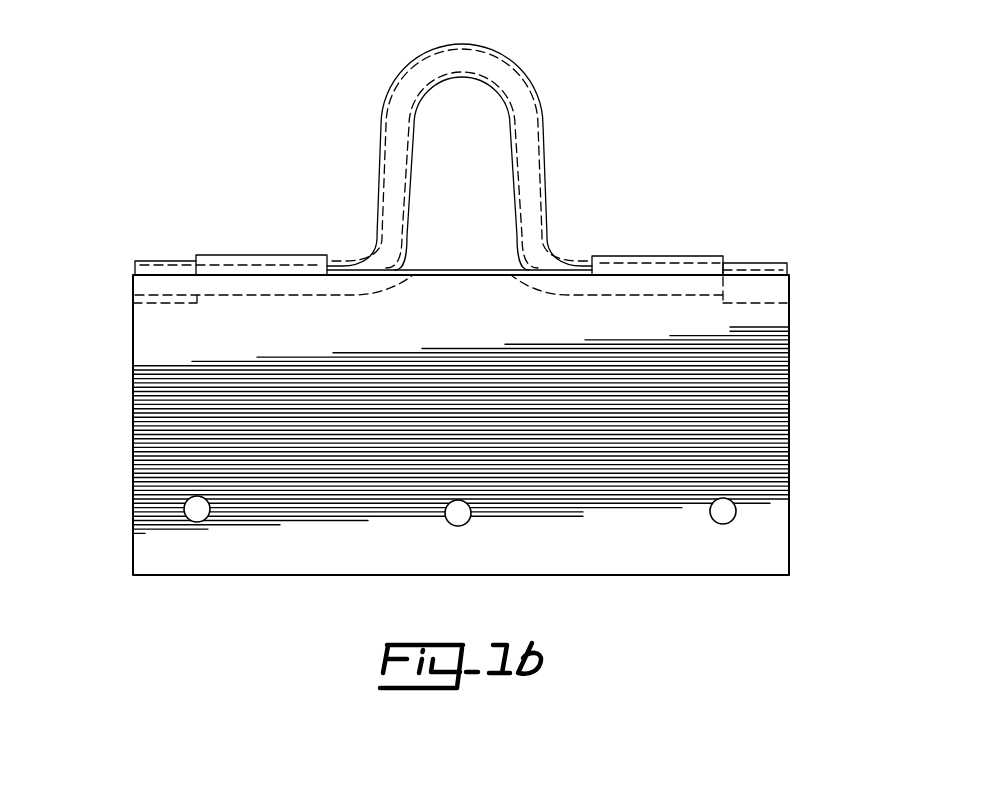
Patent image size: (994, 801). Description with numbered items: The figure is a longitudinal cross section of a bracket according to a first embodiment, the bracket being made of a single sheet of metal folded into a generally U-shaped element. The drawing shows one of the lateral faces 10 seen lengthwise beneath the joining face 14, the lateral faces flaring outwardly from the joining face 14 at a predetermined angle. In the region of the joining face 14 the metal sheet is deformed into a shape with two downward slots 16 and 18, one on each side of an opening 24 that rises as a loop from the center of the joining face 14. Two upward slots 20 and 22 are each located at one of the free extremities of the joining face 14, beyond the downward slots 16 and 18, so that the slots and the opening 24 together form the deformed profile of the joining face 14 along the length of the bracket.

The lateral face 10 is at (773, 408).
The joining face 14 is at (710, 232).
The downward slot 16 is at (255, 267).
The downward slot 18 is at (635, 256).
The upward slot 20 is at (157, 303).
The upward slot 22 is at (762, 285).
The opening 24 is at (460, 271).